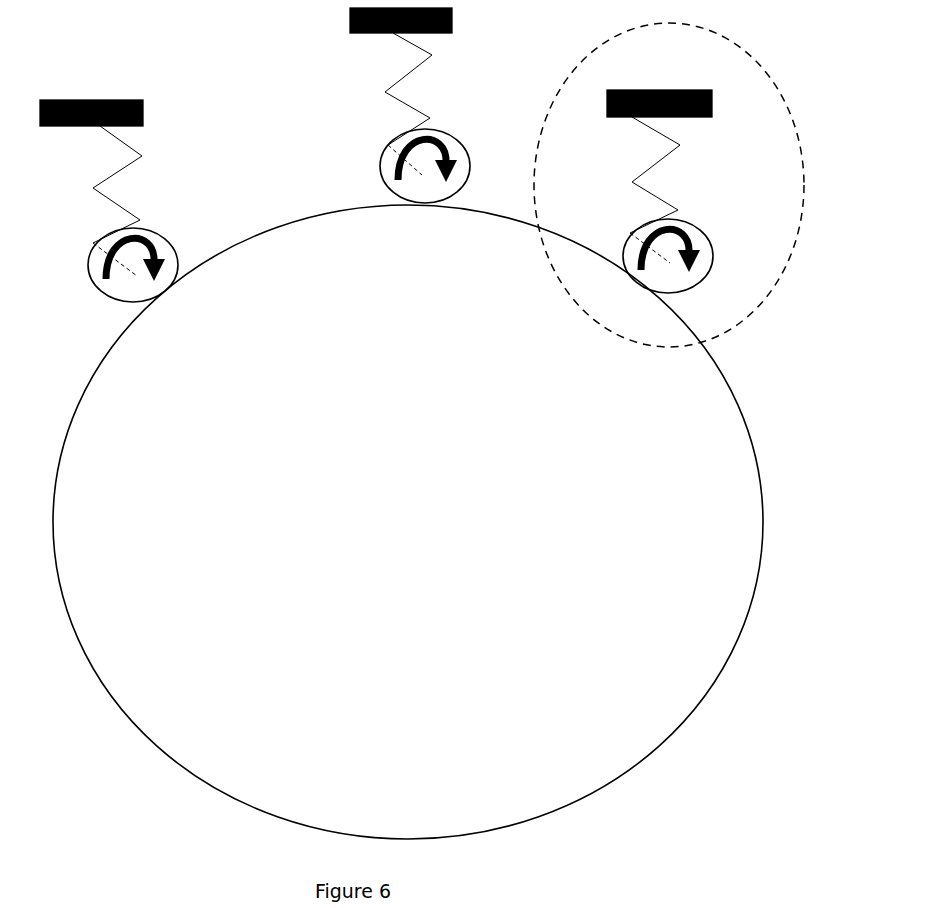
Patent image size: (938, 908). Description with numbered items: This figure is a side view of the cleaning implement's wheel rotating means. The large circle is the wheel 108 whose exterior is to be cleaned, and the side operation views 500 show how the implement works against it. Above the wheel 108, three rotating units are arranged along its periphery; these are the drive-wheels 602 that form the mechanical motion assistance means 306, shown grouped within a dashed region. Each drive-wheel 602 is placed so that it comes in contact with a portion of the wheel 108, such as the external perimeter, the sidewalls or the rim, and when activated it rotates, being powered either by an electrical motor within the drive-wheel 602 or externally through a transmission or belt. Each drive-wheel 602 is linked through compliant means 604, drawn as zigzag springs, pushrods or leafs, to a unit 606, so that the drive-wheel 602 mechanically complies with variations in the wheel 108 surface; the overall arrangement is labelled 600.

The wheel 108 is at (765, 534).
The mechanical motion assistance means 306 is at (773, 76).
The side operation views 500 is at (33, 296).
The arrangement of modules 600 is at (783, 336).
The drive-wheel 602 is at (621, 258).
The compliant means 604 is at (631, 180).
The sensor unit 606 is at (151, 110).